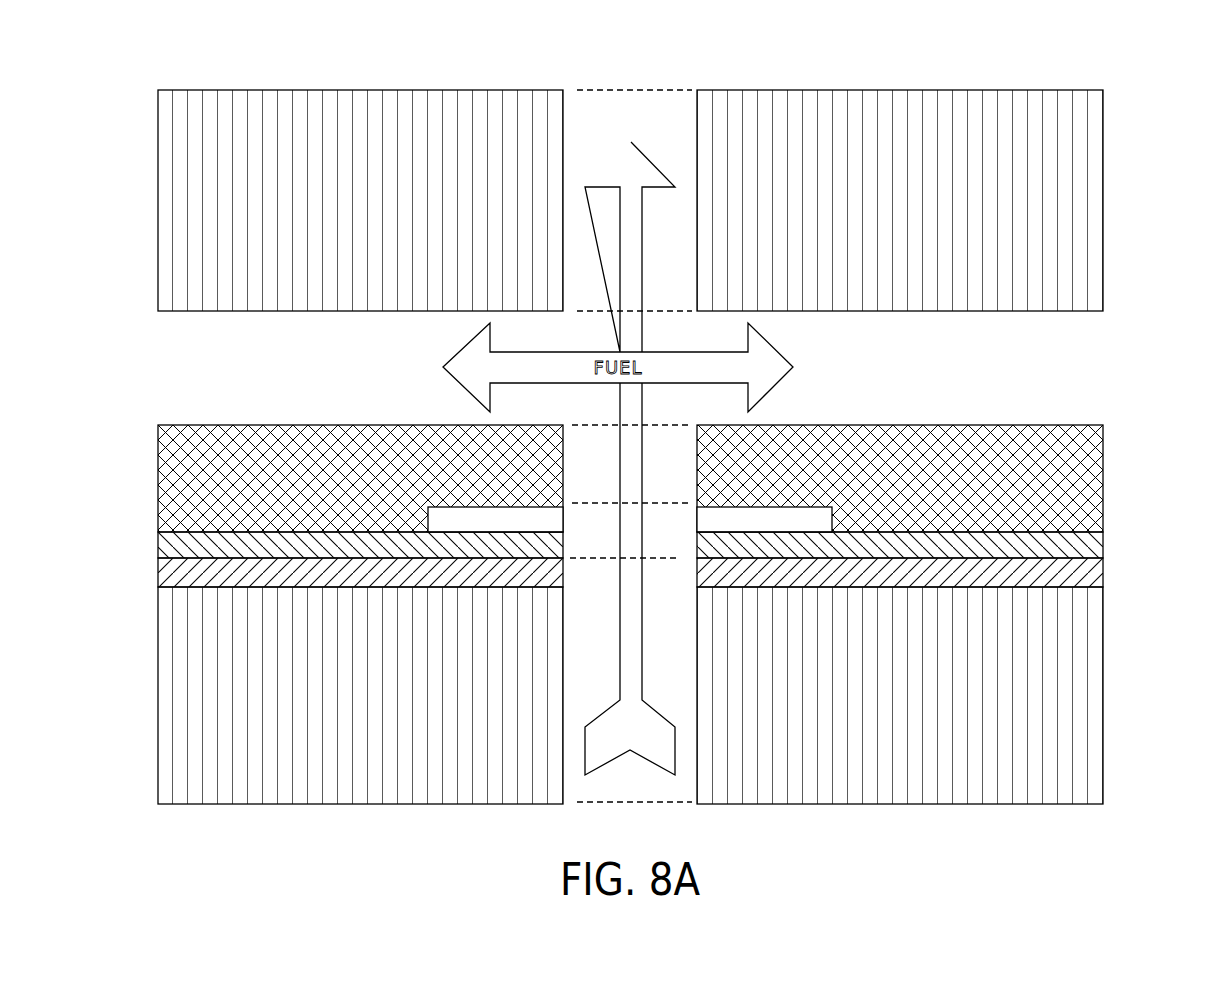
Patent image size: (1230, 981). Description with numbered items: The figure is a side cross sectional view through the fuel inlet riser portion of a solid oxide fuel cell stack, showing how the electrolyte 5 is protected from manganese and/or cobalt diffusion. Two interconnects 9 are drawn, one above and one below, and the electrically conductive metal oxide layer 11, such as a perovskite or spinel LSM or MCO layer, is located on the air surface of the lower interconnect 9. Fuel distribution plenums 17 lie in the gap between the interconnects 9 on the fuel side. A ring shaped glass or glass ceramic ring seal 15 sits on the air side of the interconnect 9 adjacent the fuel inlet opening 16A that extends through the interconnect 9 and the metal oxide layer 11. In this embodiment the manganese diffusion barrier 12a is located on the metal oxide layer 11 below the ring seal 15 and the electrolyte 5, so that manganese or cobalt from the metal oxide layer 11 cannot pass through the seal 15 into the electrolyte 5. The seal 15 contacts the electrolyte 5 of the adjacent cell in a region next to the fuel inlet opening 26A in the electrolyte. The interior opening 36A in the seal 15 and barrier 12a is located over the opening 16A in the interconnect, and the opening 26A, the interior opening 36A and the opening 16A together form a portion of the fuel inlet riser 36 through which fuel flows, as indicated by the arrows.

The interconnect 9 is at (155, 162).
The electrolyte 5 is at (158, 476).
The ring seal 15 is at (453, 513).
The manganese diffusion barrier 12a is at (157, 540).
The electrically conductive metal oxide layer 11 is at (157, 576).
The fuel distribution plenum 17 is at (165, 365).
The fuel inlet riser 36 is at (618, 113).
The fuel inlet opening in the interconnect 16A is at (610, 282).
The fuel inlet opening in the electrolyte 26A is at (692, 476).
The interior opening in the seal and barrier layer 36A is at (610, 537).